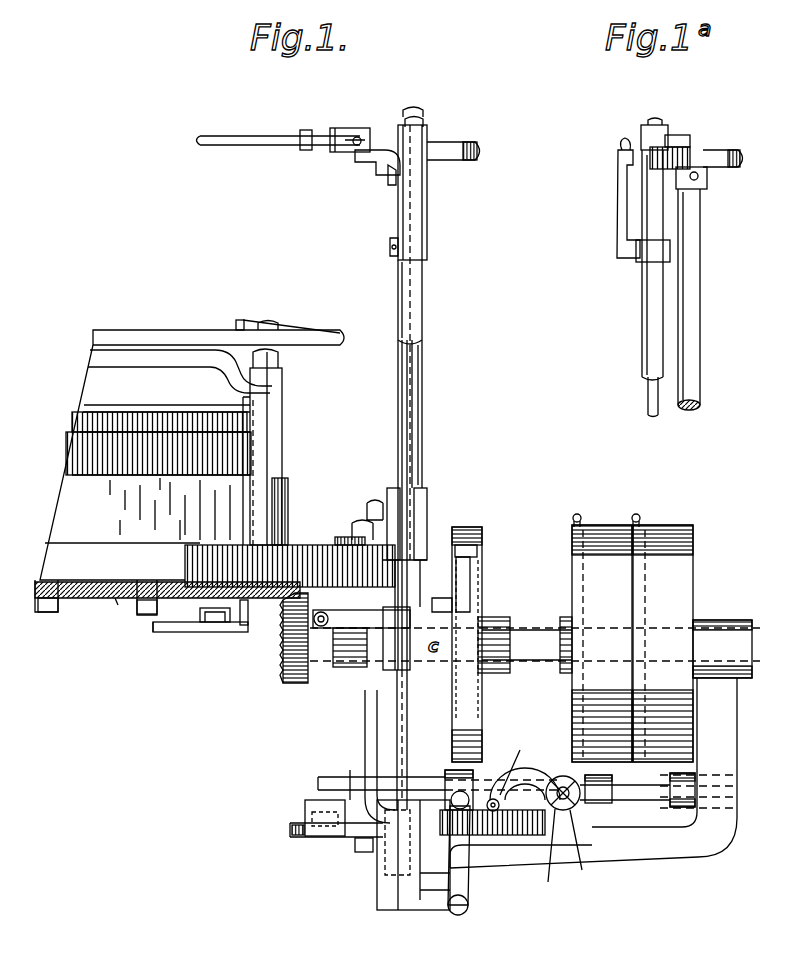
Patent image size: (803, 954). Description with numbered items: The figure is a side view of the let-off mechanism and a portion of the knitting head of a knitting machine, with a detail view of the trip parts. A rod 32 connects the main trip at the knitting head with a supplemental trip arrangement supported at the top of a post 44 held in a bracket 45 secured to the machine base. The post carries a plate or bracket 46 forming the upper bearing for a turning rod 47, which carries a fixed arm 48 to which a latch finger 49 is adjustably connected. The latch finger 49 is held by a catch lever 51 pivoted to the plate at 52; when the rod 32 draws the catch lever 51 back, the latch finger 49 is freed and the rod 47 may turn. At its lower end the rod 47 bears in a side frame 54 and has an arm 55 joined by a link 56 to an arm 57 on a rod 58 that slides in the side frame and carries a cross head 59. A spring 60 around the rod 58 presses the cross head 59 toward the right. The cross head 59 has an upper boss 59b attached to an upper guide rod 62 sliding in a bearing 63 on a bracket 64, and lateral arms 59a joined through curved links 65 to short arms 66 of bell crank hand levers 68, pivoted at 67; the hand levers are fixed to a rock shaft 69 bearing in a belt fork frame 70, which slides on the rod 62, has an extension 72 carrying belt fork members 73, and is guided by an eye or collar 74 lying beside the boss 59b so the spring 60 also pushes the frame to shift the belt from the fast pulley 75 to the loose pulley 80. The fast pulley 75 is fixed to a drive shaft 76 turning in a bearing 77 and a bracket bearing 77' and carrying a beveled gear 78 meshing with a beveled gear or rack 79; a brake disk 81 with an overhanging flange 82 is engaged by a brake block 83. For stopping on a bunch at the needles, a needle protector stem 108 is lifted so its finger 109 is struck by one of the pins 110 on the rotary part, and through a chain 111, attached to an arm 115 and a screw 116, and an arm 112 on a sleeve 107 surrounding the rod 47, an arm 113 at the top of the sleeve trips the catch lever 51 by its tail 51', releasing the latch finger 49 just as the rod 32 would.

In FIG. 1, the rod 32 is at (250, 147).
In FIG. 1, the catch lever 51 is at (315, 127).
In FIG. 1, the pivot 52 is at (345, 128).
In FIG. 1, the tail 51' is at (344, 166).
In FIG. 1, the latch finger 49 is at (409, 130).
In FIG. 1a, the latch finger 49 is at (690, 150).
In FIG. 1, the arm 48 is at (428, 126).
In FIG. 1a, the arm 48 is at (640, 128).
In FIG. 1, the plate or bracket 46 is at (484, 152).
In FIG. 1a, the plate or bracket 46 is at (708, 178).
In FIG. 1, the arm 113 is at (386, 168).
In FIG. 1a, the arm 113 is at (618, 212).
In FIG. 1, the sleeve 107 is at (400, 296).
In FIG. 1a, the sleeve 107 is at (645, 326).
In FIG. 1, the post 44 is at (400, 418).
In FIG. 1a, the post 44 is at (700, 353).
In FIG. 1, the rod 47 is at (405, 455).
In FIG. 1a, the rod 47 is at (648, 404).
In FIG. 1, the bracket 45 is at (428, 496).
In FIG. 1, the overhanging flange 82 is at (460, 536).
In FIG. 1, the brake wheel or disk 81 is at (478, 552).
In FIG. 1, the brake block 83 is at (471, 566).
In FIG. 1, the drive shaft 76 is at (526, 636).
In FIG. 1, the fast driving pulley 75 is at (600, 540).
In FIG. 1, the loose pulley 80 is at (667, 540).
In FIG. 1, the belt fork members 73 is at (577, 514).
In FIG. 1, the bracket bearing 77' is at (726, 635).
In FIG. 1, the bearing 77 is at (345, 667).
In FIG. 1, the beveled gear 78 is at (283, 672).
In FIG. 1, the arm 112 is at (361, 607).
In FIG. 1, the chain 111 is at (246, 614).
In FIG. 1, the screw 116 is at (80, 600).
In FIG. 1, the beveled gear or rack 79 is at (118, 606).
In FIG. 1, the pins 110 is at (45, 612).
In FIG. 1, the finger 109 is at (185, 632).
In FIG. 1, the stem 108 is at (240, 622).
In FIG. 1, the arm 115 is at (210, 632).
In FIG. 1, the side frame 54 is at (365, 722).
In FIG. 1, the rod 58 is at (351, 790).
In FIG. 1, the upper guide rod 62 is at (320, 783).
In FIG. 1, the arm 57 is at (303, 826).
In FIG. 1, the link 56 is at (335, 838).
In FIG. 1, the arm 55 is at (368, 848).
In FIG. 1, the belt fork frame or cross head 70 is at (446, 779).
In FIG. 1, the short arms 66 is at (493, 799).
In FIG. 1, the extension 72 is at (520, 759).
In FIG. 1, the curved links 65 is at (536, 770).
In FIG. 1, the pivot 67 is at (500, 806).
In FIG. 1, the rock shaft 69 is at (462, 822).
In FIG. 1, the spring 60 is at (505, 852).
In FIG. 1, the hand levers 68 is at (467, 903).
In FIG. 1, the bearing 63 is at (696, 778).
In FIG. 1, the eye or collar 74 is at (612, 799).
In FIG. 1, the upper boss or collar 59b is at (600, 806).
In FIG. 1, the cross head 59 is at (569, 811).
In FIG. 1, the arms 59a is at (556, 822).
In FIG. 1, the bracket 64 is at (720, 860).